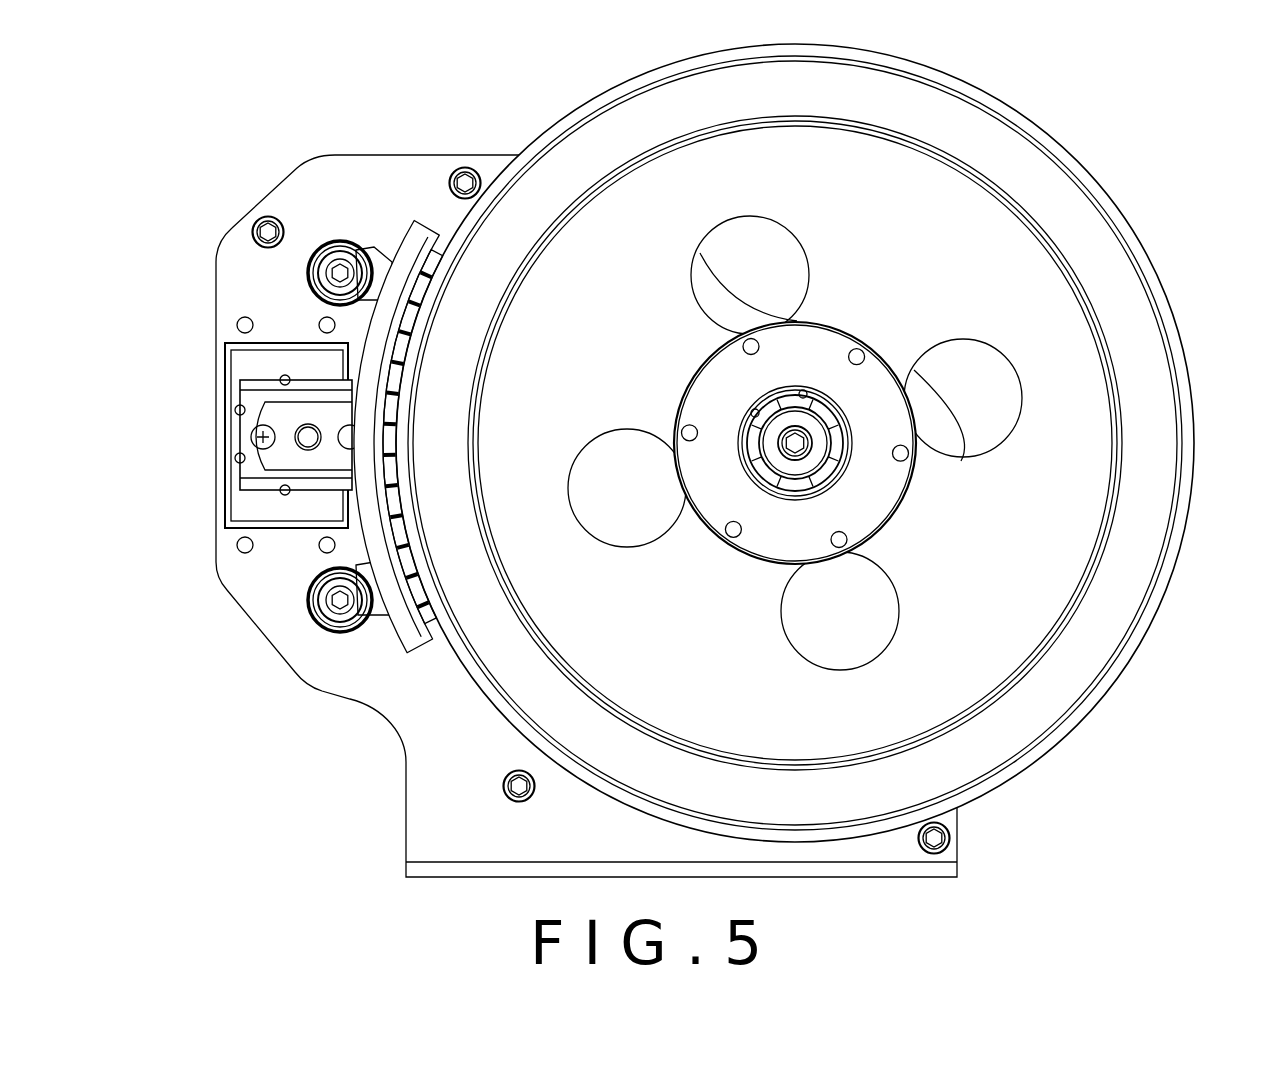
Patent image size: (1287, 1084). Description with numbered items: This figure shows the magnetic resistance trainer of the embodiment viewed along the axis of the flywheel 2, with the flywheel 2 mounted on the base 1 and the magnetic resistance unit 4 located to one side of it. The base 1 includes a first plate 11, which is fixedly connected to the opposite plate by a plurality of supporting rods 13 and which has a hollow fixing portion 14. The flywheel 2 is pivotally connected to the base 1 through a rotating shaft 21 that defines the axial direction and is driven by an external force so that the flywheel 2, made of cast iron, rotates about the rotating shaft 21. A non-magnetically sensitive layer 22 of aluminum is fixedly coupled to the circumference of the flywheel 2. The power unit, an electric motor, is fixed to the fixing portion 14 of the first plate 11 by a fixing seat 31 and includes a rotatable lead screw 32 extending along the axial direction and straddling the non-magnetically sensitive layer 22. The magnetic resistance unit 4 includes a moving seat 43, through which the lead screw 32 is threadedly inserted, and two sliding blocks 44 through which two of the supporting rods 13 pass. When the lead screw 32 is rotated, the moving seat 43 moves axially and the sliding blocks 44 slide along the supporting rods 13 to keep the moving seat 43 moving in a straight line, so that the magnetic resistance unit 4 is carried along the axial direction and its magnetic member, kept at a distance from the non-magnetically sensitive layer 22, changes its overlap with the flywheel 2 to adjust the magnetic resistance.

The base 1 is at (547, 465).
The first plate 11 is at (268, 185).
The supporting rods 13 is at (340, 273).
The fixing portion 14 is at (242, 470).
The flywheel 2 is at (837, 441).
The rotating shaft 21 is at (808, 450).
The non-magnetically sensitive layer 22 is at (577, 108).
The fixing seat 31 is at (238, 516).
The lead screw 32 is at (308, 437).
The magnetic resistance unit 4 is at (249, 453).
The moving seat 43 is at (275, 458).
The sliding blocks 44 is at (310, 258).